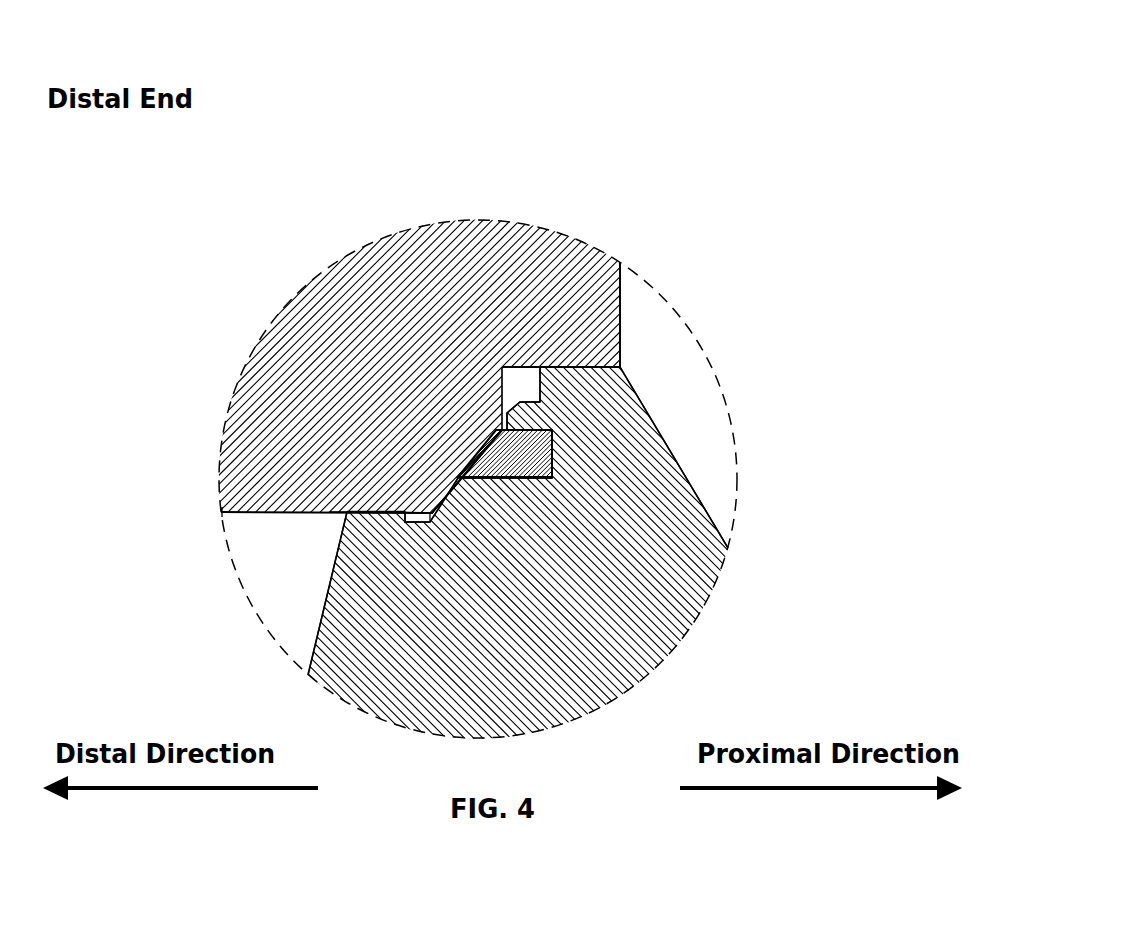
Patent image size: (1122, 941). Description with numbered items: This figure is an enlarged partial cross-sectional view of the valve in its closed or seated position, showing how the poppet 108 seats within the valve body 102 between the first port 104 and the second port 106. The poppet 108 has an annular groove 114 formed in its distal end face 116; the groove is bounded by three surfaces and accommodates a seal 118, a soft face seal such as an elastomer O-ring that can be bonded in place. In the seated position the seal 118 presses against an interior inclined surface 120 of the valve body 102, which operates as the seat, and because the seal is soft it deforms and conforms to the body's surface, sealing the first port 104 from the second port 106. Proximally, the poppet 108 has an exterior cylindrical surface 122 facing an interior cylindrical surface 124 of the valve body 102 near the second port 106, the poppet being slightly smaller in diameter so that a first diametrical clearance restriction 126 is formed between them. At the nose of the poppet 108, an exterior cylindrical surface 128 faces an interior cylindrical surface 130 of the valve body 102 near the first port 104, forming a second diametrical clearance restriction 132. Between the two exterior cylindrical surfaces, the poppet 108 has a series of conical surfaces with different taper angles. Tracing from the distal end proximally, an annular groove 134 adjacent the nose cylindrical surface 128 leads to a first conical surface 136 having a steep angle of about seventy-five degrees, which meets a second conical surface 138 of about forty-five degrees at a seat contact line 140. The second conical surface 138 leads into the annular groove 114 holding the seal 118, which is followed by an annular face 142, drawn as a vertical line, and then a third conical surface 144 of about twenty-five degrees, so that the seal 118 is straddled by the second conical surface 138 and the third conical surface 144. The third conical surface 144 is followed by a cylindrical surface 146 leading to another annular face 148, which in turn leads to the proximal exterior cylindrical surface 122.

The valve body 102 is at (330, 308).
The first port 104 is at (265, 686).
The second port 106 is at (720, 196).
The poppet 108 is at (702, 607).
The annular groove 114 is at (560, 460).
The distal end face 116 is at (333, 565).
The seal 118 is at (535, 445).
The interior inclined surface 120 is at (455, 493).
The exterior cylindrical surface 122 is at (622, 368).
The interior cylindrical surface 124 is at (495, 372).
The first diametrical clearance restriction 126 is at (575, 362).
The exterior cylindrical surface 128 is at (375, 522).
The interior cylindrical surface 130 is at (228, 522).
The second diametrical clearance restriction 132 is at (355, 503).
The annular groove 134 is at (400, 510).
The first conical surface 136 is at (447, 514).
The second conical surface 138 is at (460, 490).
The seat contact line 140 is at (460, 442).
The annular face 142 is at (500, 418).
The third conical surface 144 is at (516, 397).
The cylindrical surface 146 is at (519, 398).
The annular face 148 is at (540, 362).